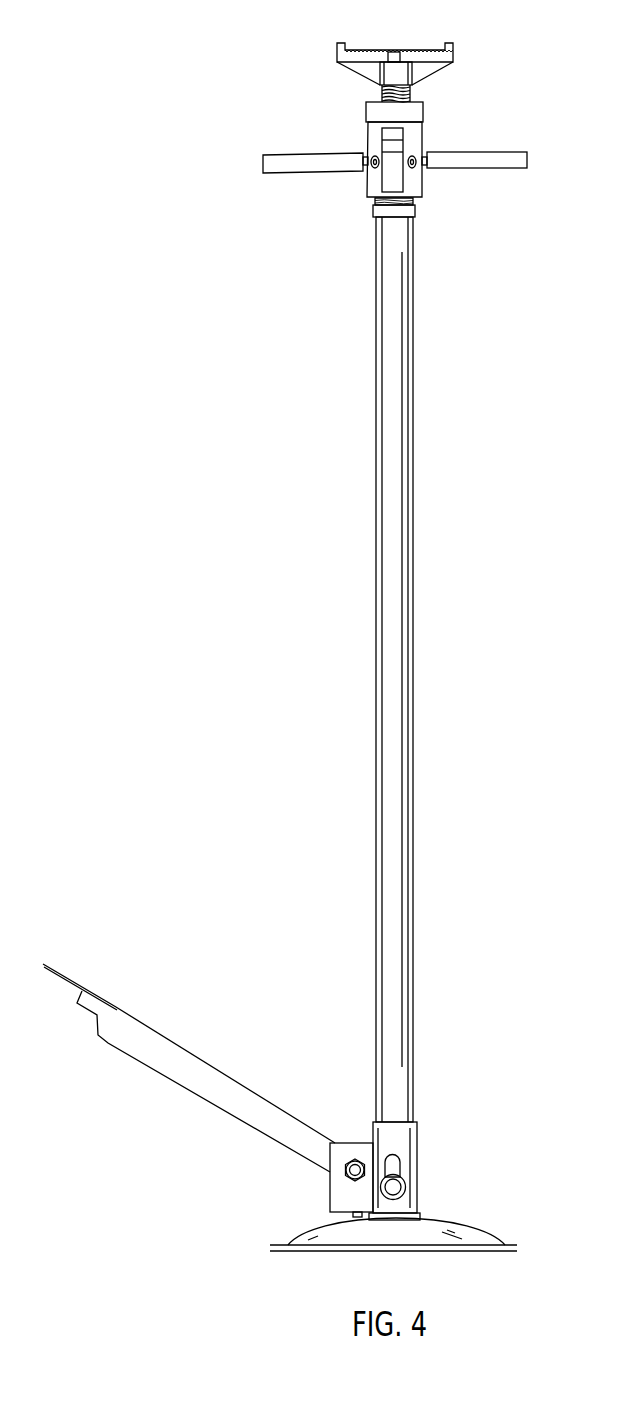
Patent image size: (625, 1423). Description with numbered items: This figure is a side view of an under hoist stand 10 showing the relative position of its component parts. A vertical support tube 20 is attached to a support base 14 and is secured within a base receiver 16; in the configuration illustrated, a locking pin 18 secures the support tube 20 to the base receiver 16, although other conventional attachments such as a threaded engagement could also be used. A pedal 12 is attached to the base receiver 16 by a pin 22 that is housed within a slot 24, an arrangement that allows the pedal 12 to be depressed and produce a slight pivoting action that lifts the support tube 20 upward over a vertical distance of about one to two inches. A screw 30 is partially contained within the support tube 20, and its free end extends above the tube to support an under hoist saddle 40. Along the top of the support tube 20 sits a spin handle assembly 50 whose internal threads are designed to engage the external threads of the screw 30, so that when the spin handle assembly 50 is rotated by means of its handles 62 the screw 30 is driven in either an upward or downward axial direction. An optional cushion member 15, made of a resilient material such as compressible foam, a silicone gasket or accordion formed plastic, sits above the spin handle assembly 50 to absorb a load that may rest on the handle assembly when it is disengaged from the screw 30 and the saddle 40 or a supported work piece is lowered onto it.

The under hoist stand 10 is at (318, 371).
The pedal 12 is at (137, 1022).
The support base 14 is at (460, 1228).
The cushion member 15 is at (425, 104).
The base receiver 16 is at (417, 1133).
The locking pin 18 is at (405, 1181).
The support tube 20 is at (414, 262).
The pin 22 is at (363, 1158).
The slot 24 is at (353, 1182).
The screw 30 is at (410, 95).
The under hoist saddle 40 is at (417, 43).
The spin handle assembly 50 is at (423, 197).
The handles 62 is at (510, 152).